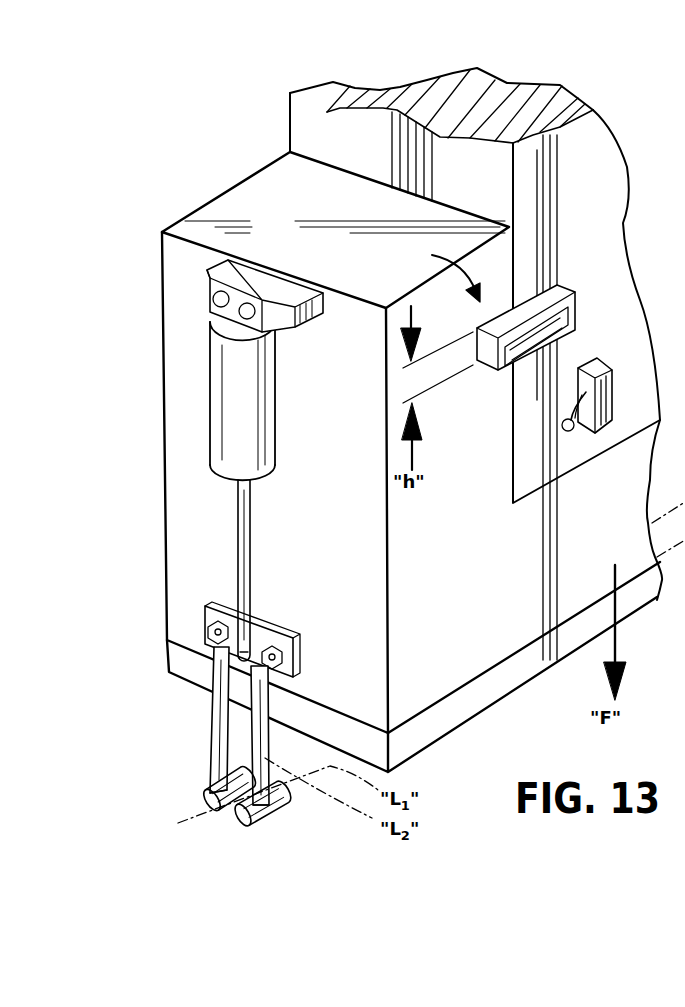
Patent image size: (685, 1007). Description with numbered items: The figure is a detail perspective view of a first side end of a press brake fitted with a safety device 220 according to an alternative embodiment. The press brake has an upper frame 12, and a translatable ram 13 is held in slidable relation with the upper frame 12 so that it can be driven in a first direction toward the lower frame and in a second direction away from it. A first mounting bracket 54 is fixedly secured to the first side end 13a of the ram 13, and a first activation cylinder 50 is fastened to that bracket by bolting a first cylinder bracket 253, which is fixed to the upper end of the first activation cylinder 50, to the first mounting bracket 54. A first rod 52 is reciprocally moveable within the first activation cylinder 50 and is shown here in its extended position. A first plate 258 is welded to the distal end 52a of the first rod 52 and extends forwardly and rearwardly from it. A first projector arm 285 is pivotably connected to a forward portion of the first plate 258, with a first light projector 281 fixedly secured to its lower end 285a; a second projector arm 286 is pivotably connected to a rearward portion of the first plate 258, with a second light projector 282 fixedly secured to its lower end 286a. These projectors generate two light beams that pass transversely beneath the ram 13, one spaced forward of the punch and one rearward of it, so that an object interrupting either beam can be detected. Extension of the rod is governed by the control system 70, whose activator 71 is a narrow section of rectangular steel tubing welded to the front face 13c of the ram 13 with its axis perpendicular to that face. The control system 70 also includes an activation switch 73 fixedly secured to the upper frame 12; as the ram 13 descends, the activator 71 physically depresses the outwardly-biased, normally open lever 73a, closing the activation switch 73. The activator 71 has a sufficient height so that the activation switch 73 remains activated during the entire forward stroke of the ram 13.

The upper frame 12 is at (593, 172).
The ram 13 is at (249, 192).
The first side end 13a is at (176, 300).
The front face 13c is at (486, 551).
The first activation cylinder 50 is at (218, 392).
The first rod 52 is at (238, 498).
The distal end 52a is at (172, 662).
The first mounting bracket 54 is at (238, 277).
The control system 70 is at (438, 273).
The activator 71 is at (488, 352).
The activation switch 73 is at (607, 395).
The lever 73a is at (583, 440).
The safety device 220 is at (285, 737).
The first cylinder bracket 253 is at (210, 321).
The first plate 258 is at (252, 640).
The first light projector 281 is at (255, 827).
The second light projector 282 is at (222, 818).
The first projector arm 285 is at (270, 702).
The lower end 285a is at (272, 818).
The second projector arm 286 is at (218, 712).
The lower end 286a is at (210, 790).